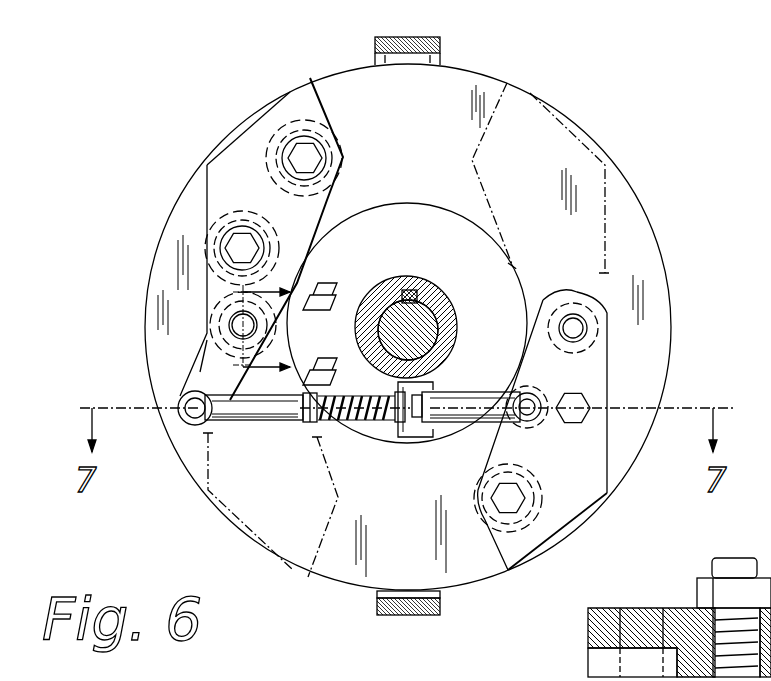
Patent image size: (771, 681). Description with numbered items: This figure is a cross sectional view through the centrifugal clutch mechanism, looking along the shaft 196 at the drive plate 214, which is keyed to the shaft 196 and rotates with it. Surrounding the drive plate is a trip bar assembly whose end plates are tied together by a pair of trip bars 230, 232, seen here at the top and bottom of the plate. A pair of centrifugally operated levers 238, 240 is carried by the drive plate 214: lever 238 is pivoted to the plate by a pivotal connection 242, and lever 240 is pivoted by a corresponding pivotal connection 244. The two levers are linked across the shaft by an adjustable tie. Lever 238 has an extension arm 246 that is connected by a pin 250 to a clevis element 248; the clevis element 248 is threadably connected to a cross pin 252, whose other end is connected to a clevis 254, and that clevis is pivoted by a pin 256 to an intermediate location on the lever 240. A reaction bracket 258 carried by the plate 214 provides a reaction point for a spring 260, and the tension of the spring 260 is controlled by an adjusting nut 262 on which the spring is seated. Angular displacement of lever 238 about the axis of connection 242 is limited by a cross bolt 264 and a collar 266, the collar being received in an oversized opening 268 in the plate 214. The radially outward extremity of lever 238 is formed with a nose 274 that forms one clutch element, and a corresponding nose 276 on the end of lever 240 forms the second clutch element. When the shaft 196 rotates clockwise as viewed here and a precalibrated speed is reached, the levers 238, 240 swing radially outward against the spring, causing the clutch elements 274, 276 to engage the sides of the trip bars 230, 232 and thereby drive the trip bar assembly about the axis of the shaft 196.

The shaft 196 is at (450, 303).
The drive plate 214 is at (413, 546).
The trip bar 230 is at (440, 45).
The trip bar 232 is at (407, 616).
The centrifugally operated lever 238 is at (247, 216).
The centrifugally operated lever 240 is at (565, 461).
The pivotal connection 242 is at (232, 333).
The pivotal connection 244 is at (575, 327).
The extension arm 246 is at (200, 372).
The clevis element 248 is at (262, 420).
The pin 250 is at (190, 414).
The cross pin 252 is at (313, 427).
The clevis 254 is at (470, 421).
The pin 256 is at (535, 418).
The reaction bracket 258 is at (413, 436).
The spring 260 is at (367, 420).
The adjusting nut 262 is at (325, 400).
The cross bolt 264 is at (318, 158).
The collar 266 is at (322, 148).
The oversized opening 268 is at (307, 186).
The nose 274 is at (312, 78).
The nose 276 is at (510, 573).